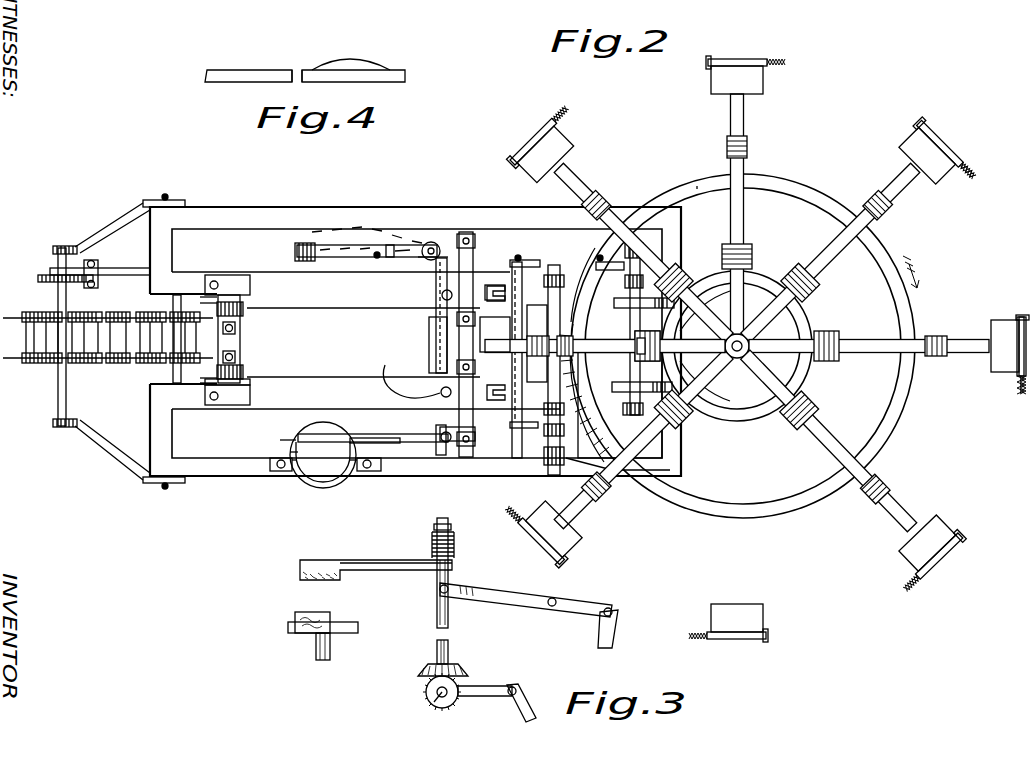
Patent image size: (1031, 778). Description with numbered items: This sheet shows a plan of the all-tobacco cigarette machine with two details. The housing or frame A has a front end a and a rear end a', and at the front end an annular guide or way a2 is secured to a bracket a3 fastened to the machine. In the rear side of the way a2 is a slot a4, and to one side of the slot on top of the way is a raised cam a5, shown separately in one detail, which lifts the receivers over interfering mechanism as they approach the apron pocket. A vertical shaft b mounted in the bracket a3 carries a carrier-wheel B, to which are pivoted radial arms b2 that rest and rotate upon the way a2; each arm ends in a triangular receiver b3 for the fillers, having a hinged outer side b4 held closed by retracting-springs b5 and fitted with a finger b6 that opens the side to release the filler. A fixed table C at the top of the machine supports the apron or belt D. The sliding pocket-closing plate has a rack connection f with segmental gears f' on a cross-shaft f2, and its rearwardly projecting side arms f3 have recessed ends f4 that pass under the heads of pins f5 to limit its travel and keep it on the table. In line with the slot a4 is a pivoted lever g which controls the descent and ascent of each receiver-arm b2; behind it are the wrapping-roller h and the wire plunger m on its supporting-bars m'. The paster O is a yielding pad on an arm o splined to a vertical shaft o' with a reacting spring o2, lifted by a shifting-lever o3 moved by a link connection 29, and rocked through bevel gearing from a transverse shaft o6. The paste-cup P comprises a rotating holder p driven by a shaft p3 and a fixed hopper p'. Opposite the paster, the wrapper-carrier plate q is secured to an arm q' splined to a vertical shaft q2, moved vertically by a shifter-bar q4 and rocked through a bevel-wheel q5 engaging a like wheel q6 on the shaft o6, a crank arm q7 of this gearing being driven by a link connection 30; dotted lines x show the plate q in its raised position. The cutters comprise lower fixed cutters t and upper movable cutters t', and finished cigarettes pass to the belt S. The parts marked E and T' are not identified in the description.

In FIG. 2, the front end a is at (704, 212).
In FIG. 2, the rear end a' is at (119, 355).
In FIG. 4, the guide or way a2 is at (320, 81).
In FIG. 2, the guide or way a2 is at (744, 346).
In FIG. 2, the bracket a3 is at (737, 346).
In FIG. 4, the slot a4 is at (298, 70).
In FIG. 2, the slot a4 is at (579, 290).
In FIG. 4, the raised cam a5 is at (350, 62).
In FIG. 2, the raised cam a5 is at (583, 393).
In FIG. 2, the vertical shaft b is at (748, 339).
In FIG. 2, the radial arms b2 is at (734, 331).
In FIG. 2, the receiver b3 is at (478, 363).
In FIG. 2, the hinged side b4 is at (766, 349).
In FIG. 2, the retracting-springs b5 is at (954, 183).
In FIG. 2, the finger b6 is at (1009, 337).
In FIG. 2, the housing or frame A is at (415, 331).
In FIG. 2, the carrier-wheel B is at (824, 325).
In FIG. 2, the fixed table C is at (363, 294).
In FIG. 2, the apron or belt D is at (363, 349).
In FIG. 2, the frame partition E is at (613, 351).
In FIG. 2, the belt S is at (108, 346).
In FIG. 2, the bracket T' is at (227, 317).
In FIG. 2, the lower fixed cutters t is at (220, 405).
In FIG. 2, the upper movable cutters t' is at (233, 382).
In FIG. 2, the paste-cup P is at (323, 446).
In FIG. 2, the rotating holder p is at (318, 466).
In FIG. 3, the rotating holder p is at (330, 635).
In FIG. 2, the fixed hopper p' is at (276, 482).
In FIG. 3, the fixed hopper p' is at (327, 608).
In FIG. 3, the shaft p3 is at (318, 658).
In FIG. 2, the paster O is at (324, 434).
In FIG. 3, the paster O is at (362, 574).
In FIG. 2, the paster-arm o is at (374, 427).
In FIG. 3, the paster-arm o is at (396, 551).
In FIG. 2, the vertical shaft o' is at (418, 467).
In FIG. 3, the vertical shaft o' is at (424, 571).
In FIG. 3, the reacting spring o2 is at (458, 545).
In FIG. 2, the shifting-lever o3 is at (552, 480).
In FIG. 3, the shifting-lever o3 is at (520, 612).
In FIG. 3, the transverse shaft o6 is at (436, 706).
In FIG. 2, the wrapper-carrier plate q is at (428, 315).
In FIG. 2, the arm q' is at (433, 280).
In FIG. 2, the vertical shaft q2 is at (415, 266).
In FIG. 3, the vertical shaft q2 is at (450, 645).
In FIG. 2, the shifter-bar q4 is at (362, 247).
In FIG. 3, the bevel-wheel q5 is at (424, 670).
In FIG. 3, the bevel-wheel q6 is at (425, 695).
In FIG. 3, the arm q7 is at (484, 698).
In FIG. 2, the dotted lines x is at (332, 228).
In FIG. 2, the plunger m is at (437, 344).
In FIG. 2, the supporting-bars m' is at (457, 468).
In FIG. 2, the wrapping-roller h is at (518, 478).
In FIG. 2, the pivoted lever g is at (540, 300).
In FIG. 2, the rack connection f is at (705, 346).
In FIG. 2, the segmental gears f' is at (636, 338).
In FIG. 2, the cross-shaft f2 is at (625, 262).
In FIG. 2, the side arms f3 is at (500, 290).
In FIG. 2, the recessed ends f4 is at (488, 285).
In FIG. 2, the pins f5 is at (452, 275).
In FIG. 3, the link connection 29 is at (621, 633).
In FIG. 3, the link connection 30 is at (534, 713).